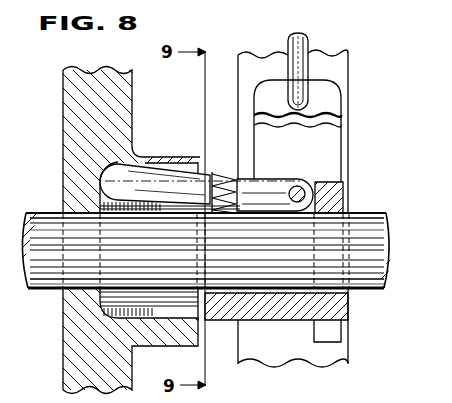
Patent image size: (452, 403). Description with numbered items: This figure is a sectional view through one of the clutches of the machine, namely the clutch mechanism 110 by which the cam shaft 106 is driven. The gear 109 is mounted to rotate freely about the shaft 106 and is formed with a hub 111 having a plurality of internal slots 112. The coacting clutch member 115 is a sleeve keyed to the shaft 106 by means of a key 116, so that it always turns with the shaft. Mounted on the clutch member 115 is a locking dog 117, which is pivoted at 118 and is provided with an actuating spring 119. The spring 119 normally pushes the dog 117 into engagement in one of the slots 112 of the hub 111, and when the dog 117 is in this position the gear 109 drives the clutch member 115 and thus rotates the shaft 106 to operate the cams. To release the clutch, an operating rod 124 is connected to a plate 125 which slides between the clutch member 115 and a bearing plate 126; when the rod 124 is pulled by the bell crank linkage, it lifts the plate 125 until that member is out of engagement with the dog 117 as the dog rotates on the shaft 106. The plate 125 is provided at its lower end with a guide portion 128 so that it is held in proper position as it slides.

The shaft 106 is at (372, 241).
The gear 109 is at (118, 102).
The clutch mechanism 110 is at (228, 310).
The hub 111 is at (145, 165).
The internal slots 112 is at (178, 313).
The clutch member 115 is at (333, 201).
The key 116 is at (328, 292).
The dog 117 is at (185, 172).
The pivot 118 is at (306, 188).
The actuating spring 119 is at (208, 176).
The operating rod 124 is at (306, 40).
The plate 125 is at (330, 97).
The bearing plate 126 is at (343, 120).
The guide portion 128 is at (330, 333).